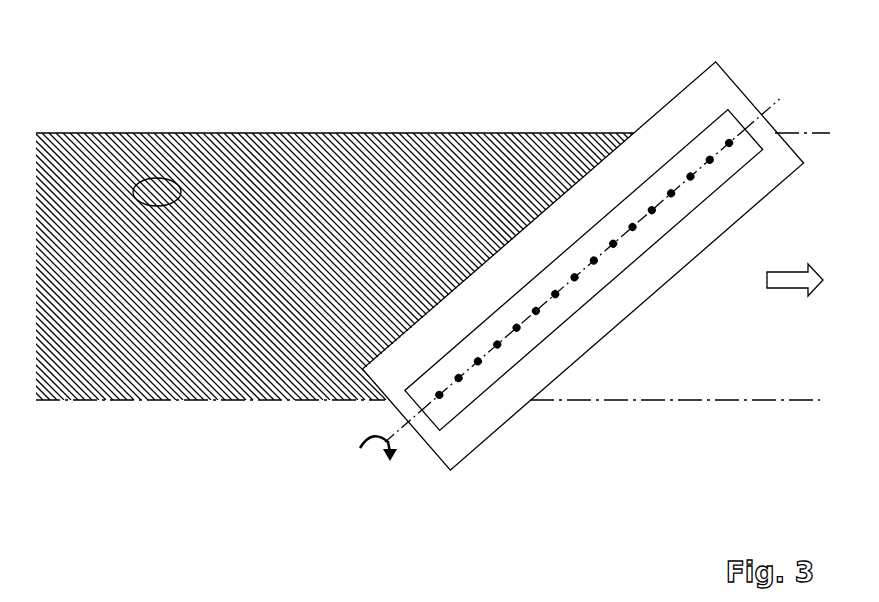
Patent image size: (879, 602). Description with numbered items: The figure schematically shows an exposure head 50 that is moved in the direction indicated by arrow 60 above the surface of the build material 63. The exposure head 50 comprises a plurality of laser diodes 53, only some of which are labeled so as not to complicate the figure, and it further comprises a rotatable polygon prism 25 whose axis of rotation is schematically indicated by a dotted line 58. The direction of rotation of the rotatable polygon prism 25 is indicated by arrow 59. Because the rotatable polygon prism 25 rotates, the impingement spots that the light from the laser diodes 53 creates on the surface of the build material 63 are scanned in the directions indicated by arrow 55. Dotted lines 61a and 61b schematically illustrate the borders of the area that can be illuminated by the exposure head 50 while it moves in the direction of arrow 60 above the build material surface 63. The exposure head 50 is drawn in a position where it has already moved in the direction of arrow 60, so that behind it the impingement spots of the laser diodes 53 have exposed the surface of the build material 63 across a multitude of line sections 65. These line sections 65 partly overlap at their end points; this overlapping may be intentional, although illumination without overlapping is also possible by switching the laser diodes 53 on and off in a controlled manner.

The rotatable polygon prism 25 is at (478, 396).
The exposure head 50 is at (637, 130).
The laser diodes 53 is at (708, 156).
The arrow indicating scanning directions 55 is at (583, 282).
The axis of rotation 58 is at (768, 103).
The arrow indicating direction of rotation 59 is at (398, 452).
The arrow indicating direction of movement 60 is at (790, 296).
The border of illuminable area 61a is at (345, 133).
The border of illuminable area 61b is at (270, 400).
The build material surface 63 is at (33, 142).
The line sections 65 is at (150, 180).